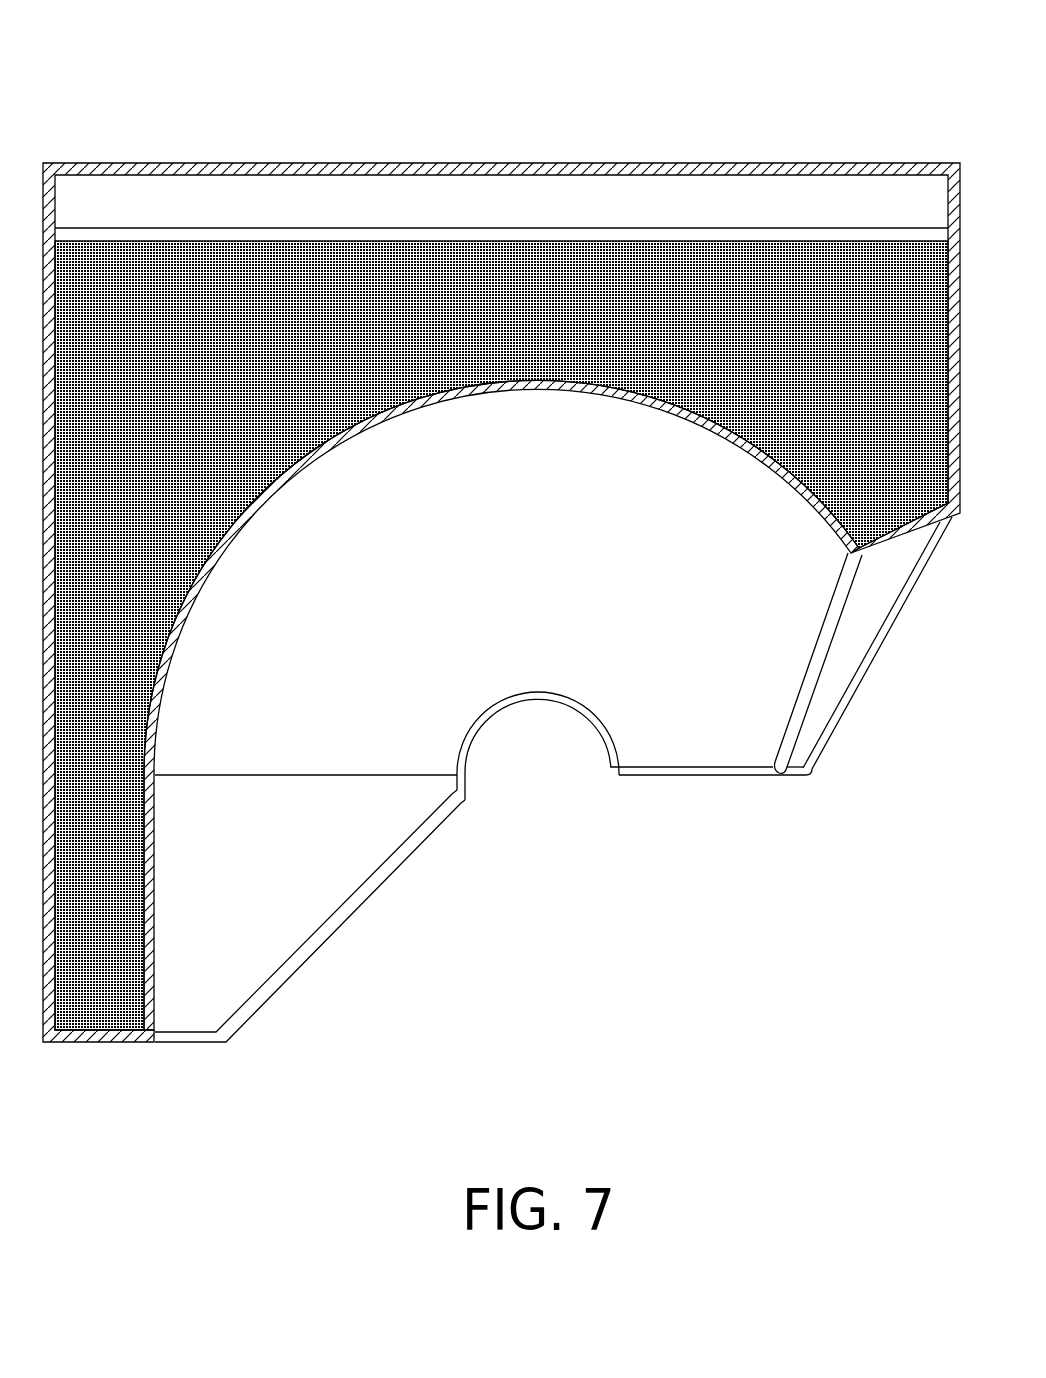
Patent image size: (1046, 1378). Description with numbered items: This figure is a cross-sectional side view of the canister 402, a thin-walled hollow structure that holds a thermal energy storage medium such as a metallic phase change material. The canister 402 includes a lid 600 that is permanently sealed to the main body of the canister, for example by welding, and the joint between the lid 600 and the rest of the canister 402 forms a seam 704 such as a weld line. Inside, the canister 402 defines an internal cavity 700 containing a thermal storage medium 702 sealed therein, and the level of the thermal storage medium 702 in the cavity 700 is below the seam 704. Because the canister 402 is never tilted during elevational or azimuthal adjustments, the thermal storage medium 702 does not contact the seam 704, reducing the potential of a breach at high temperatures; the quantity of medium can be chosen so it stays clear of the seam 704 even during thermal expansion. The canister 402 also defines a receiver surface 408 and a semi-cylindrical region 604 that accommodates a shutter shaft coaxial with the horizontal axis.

The canister 402 is at (501, 530).
The lid 600 is at (145, 163).
The internal cavity 700 is at (501, 176).
The seam 704 is at (291, 229).
The thermal storage medium 702 is at (512, 350).
The receiver surface 408 is at (287, 482).
The semi-cylindrical region 604 is at (472, 740).